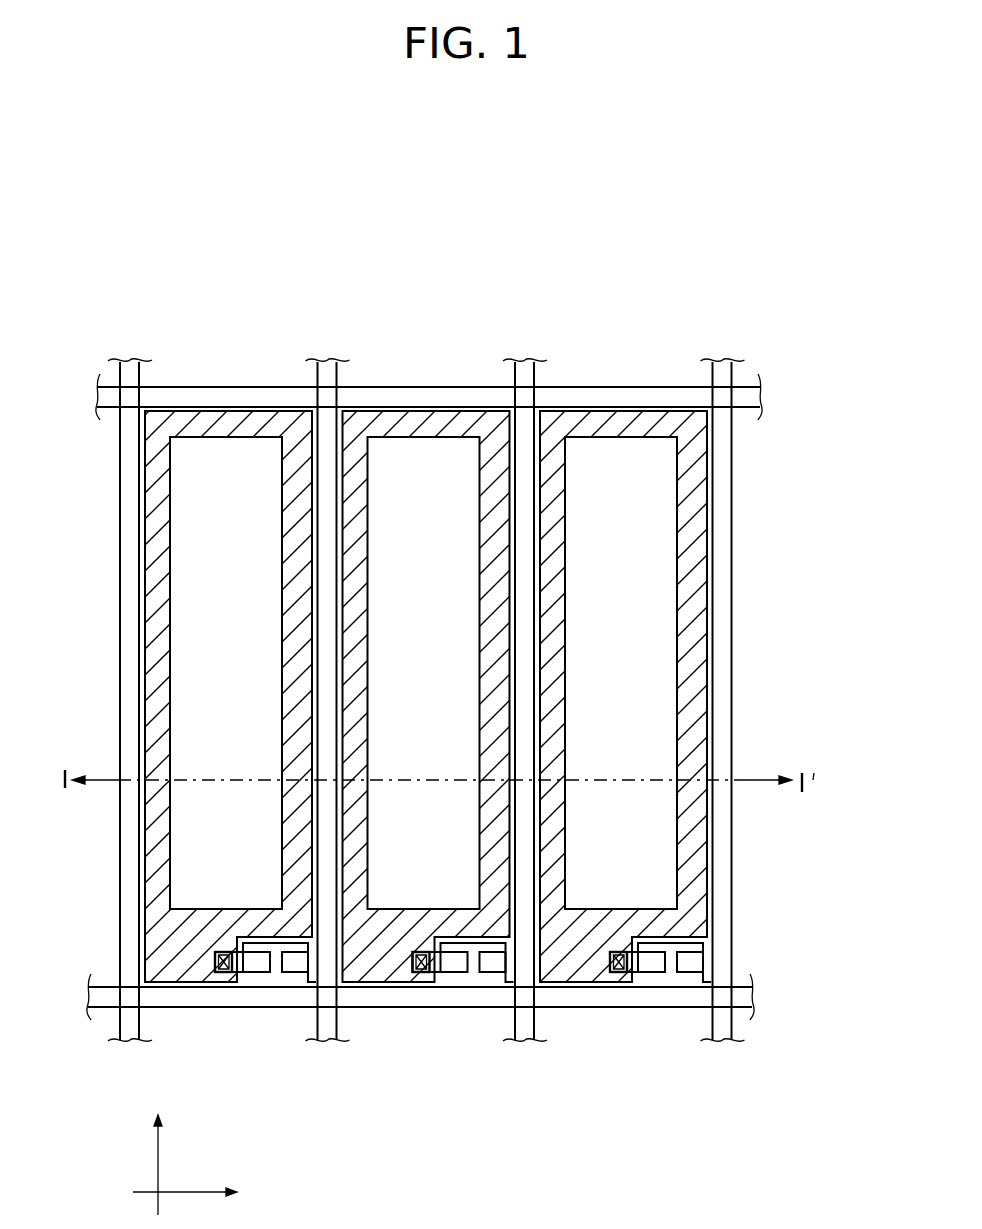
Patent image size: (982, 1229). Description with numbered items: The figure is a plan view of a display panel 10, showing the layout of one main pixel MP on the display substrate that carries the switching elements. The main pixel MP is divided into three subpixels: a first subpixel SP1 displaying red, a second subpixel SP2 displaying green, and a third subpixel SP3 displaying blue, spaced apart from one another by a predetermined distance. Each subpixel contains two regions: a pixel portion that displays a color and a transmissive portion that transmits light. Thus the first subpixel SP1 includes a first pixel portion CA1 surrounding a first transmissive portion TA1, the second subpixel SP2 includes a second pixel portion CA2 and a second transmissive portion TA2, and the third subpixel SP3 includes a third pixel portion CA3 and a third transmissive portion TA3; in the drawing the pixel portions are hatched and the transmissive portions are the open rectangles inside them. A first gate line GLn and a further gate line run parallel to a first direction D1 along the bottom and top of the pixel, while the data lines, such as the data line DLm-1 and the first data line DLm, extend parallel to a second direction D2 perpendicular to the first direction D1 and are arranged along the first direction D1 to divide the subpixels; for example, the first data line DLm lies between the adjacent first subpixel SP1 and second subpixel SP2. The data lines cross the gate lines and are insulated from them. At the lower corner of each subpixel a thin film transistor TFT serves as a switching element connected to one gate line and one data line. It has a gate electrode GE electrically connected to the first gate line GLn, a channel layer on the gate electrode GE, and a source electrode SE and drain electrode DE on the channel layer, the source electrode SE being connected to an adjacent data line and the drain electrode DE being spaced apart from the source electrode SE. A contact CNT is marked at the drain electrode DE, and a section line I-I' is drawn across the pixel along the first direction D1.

The display panel 10 is at (224, 203).
The main pixel MP is at (642, 253).
The first subpixel SP1 is at (275, 293).
The second subpixel SP2 is at (472, 293).
The third subpixel SP3 is at (670, 293).
The first pixel portion CA1 is at (208, 427).
The first transmissive portion TA1 is at (257, 465).
The second pixel portion CA2 is at (406, 427).
The second transmissive portion TA2 is at (454, 465).
The third pixel portion CA3 is at (603, 427).
The third transmissive portion TA3 is at (652, 465).
The data line DLm-1 is at (130, 365).
The first data line DLm is at (328, 365).
The first gate line GLn is at (755, 997).
The thin film transistor TFT is at (651, 1027).
The gate electrode GE is at (670, 972).
The source electrode SE is at (693, 968).
The drain electrode DE is at (645, 968).
The contact hole CNT is at (618, 972).
The section line I is at (405, 779).
The section line I' is at (779, 782).
The first direction D1 is at (198, 1192).
The second direction D2 is at (158, 1151).